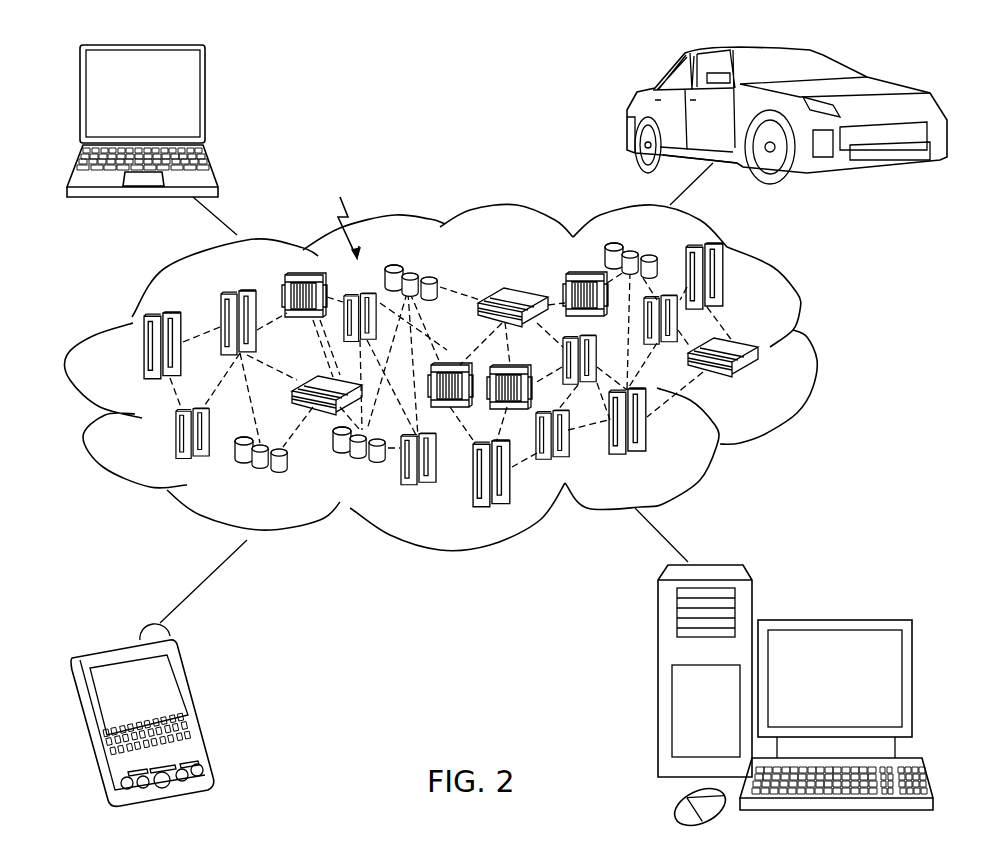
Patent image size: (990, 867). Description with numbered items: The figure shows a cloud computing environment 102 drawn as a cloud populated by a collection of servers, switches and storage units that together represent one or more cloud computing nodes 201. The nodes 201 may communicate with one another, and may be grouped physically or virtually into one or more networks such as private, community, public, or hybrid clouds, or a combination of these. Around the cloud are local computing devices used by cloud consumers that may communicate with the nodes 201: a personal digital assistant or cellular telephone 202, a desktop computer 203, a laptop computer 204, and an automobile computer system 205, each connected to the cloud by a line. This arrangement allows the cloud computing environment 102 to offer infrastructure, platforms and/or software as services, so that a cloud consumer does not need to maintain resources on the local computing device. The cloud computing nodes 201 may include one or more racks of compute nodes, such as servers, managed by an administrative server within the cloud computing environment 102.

The cloud computing environment 102 is at (817, 352).
The cloud computing nodes 201 is at (338, 215).
The personal digital assistant (PDA) or cellular telephone 202 is at (198, 703).
The desktop computer 203 is at (833, 620).
The laptop computer 204 is at (206, 100).
The automobile computer system 205 is at (627, 108).